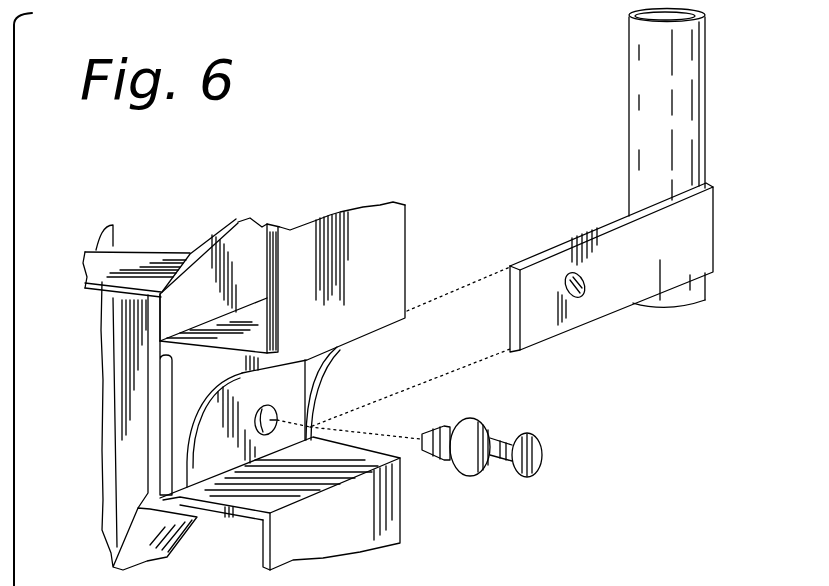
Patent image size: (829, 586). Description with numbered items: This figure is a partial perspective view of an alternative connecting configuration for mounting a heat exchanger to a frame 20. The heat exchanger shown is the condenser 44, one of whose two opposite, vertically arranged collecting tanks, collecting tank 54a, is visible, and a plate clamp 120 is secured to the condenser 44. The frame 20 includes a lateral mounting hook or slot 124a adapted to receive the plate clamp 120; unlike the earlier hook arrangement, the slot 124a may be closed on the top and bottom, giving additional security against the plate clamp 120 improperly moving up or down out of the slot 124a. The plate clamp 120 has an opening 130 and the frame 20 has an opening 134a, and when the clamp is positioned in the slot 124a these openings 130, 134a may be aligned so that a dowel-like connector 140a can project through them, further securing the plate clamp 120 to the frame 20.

The frame 20 is at (382, 226).
The slot 124a is at (168, 438).
The opening 134a is at (278, 422).
The condenser 44 is at (705, 59).
The collecting tank 54a is at (688, 118).
The plate clamp 120 is at (617, 297).
The opening 130 is at (576, 300).
The connector 140a is at (492, 460).